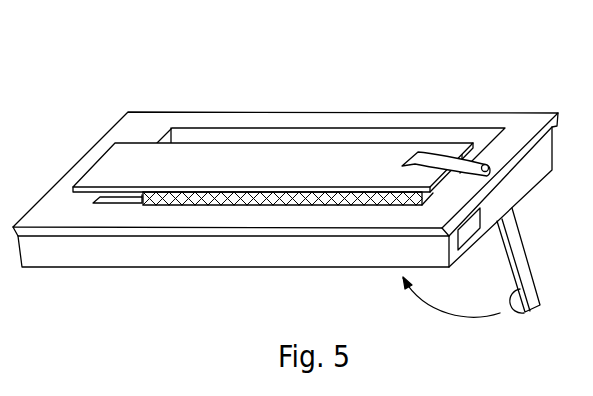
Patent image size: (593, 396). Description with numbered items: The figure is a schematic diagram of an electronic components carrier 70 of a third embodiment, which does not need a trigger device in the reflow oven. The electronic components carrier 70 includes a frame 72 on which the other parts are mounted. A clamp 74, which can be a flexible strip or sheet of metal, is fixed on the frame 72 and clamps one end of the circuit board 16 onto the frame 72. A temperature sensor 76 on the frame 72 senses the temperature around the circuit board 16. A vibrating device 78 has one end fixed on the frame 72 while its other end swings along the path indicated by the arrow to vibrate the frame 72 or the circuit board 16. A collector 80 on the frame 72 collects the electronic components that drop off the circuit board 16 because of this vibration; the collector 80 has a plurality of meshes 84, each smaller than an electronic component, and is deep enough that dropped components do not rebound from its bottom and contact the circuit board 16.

The electronic components carrier 70 is at (293, 178).
The frame 72 is at (157, 117).
The circuit board 16 is at (253, 148).
The clamp 74 is at (489, 170).
The temperature sensor 76 is at (472, 235).
The vibrating device 78 is at (523, 266).
The collector 80 is at (123, 203).
The meshes 84 is at (223, 205).